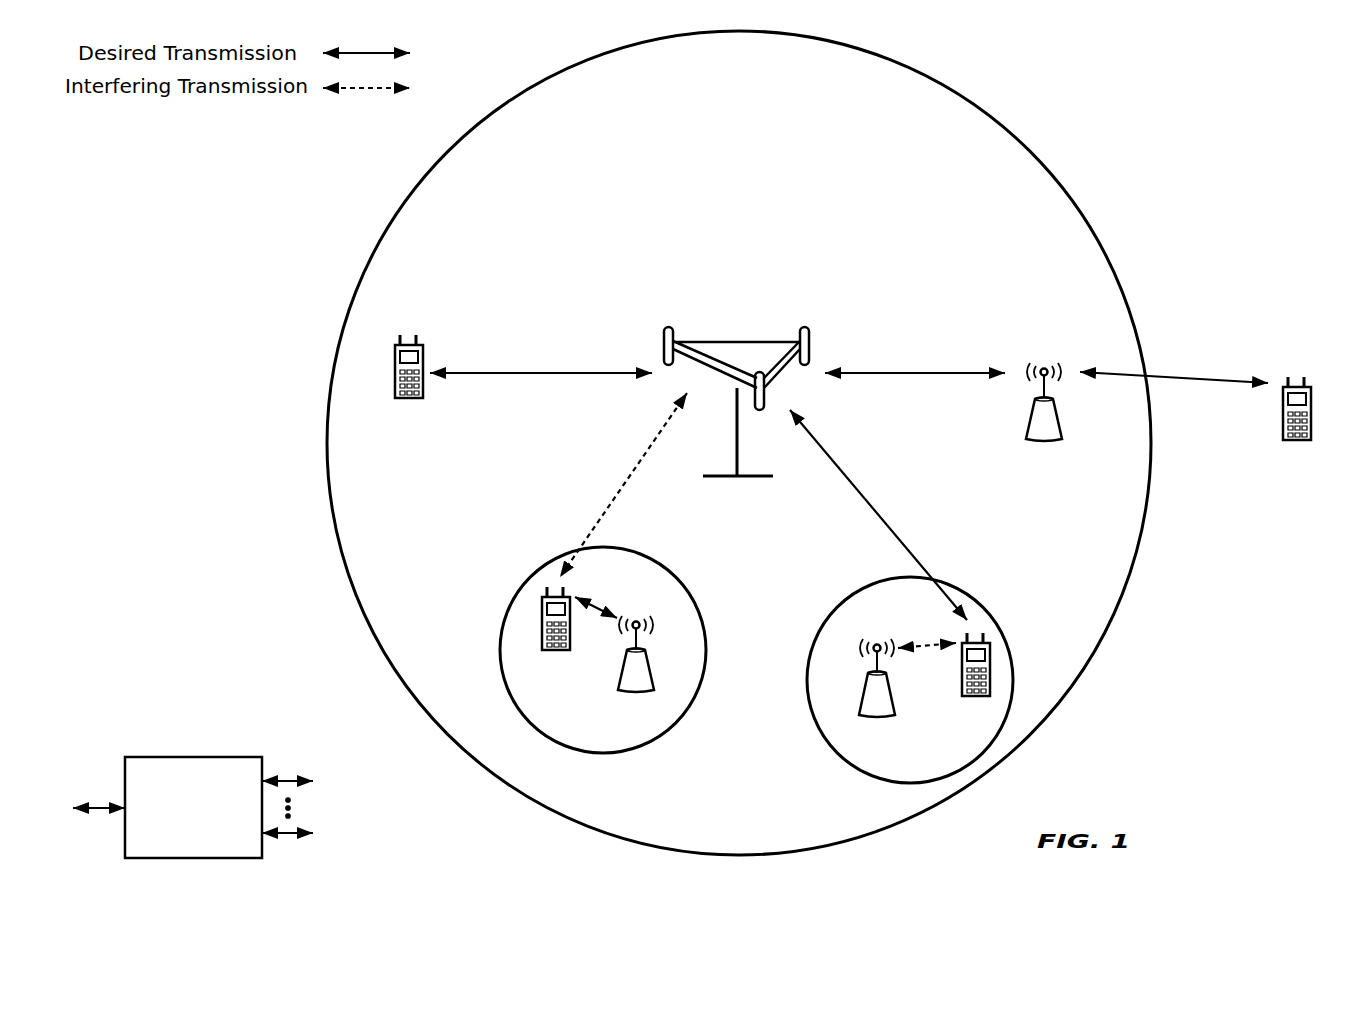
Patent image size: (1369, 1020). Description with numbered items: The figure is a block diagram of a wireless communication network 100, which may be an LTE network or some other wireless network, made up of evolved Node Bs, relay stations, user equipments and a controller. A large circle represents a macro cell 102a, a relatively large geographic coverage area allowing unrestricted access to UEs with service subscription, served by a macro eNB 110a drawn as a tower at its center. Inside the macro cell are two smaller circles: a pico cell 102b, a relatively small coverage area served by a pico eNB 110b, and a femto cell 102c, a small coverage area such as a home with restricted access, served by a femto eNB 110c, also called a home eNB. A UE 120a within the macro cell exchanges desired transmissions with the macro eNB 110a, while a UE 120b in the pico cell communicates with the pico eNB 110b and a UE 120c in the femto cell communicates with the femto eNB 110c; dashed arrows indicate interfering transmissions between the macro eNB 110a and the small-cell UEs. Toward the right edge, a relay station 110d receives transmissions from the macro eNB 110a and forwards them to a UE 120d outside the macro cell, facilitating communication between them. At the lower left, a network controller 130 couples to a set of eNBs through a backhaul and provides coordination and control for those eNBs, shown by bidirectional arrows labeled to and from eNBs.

The wireless communication network 100 is at (1214, 96).
The macro cell 102a is at (1020, 118).
The pico cell 102b is at (692, 566).
The femto cell 102c is at (833, 611).
The macro eNB 110a is at (732, 342).
The pico eNB 110b is at (651, 676).
The femto eNB 110c is at (862, 701).
The relay station 110d is at (1046, 364).
The UE 120a is at (395, 354).
The UE 120b is at (542, 647).
The UE 120c is at (962, 693).
The UE 120d is at (1312, 396).
The network controller 130 is at (188, 757).